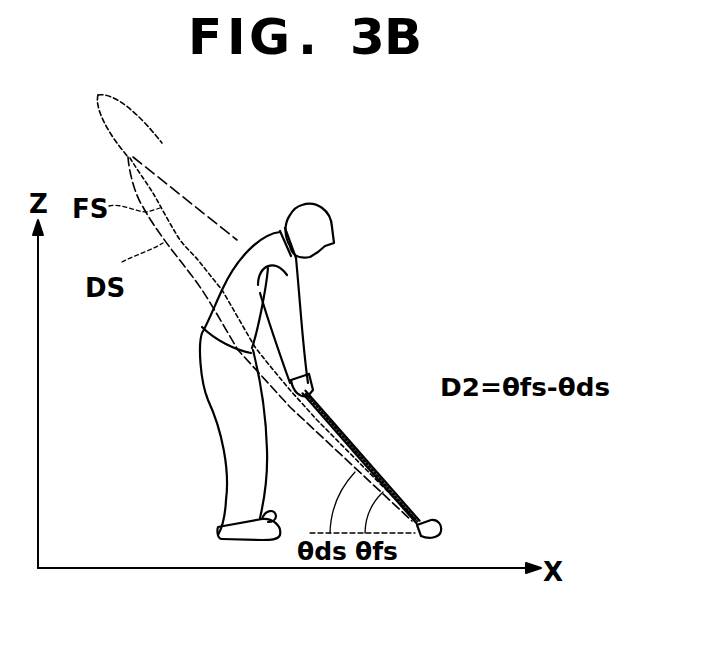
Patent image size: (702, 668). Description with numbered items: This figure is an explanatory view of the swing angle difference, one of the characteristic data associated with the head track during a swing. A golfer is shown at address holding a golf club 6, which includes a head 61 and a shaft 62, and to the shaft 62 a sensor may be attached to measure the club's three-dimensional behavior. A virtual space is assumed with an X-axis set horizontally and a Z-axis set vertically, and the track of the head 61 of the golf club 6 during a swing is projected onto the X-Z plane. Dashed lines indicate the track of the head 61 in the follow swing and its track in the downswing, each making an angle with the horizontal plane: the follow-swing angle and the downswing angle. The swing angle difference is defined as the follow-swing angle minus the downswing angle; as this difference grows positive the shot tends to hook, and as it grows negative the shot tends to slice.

The golf club 6 is at (412, 453).
The head 61 is at (442, 528).
The shaft 62 is at (326, 412).